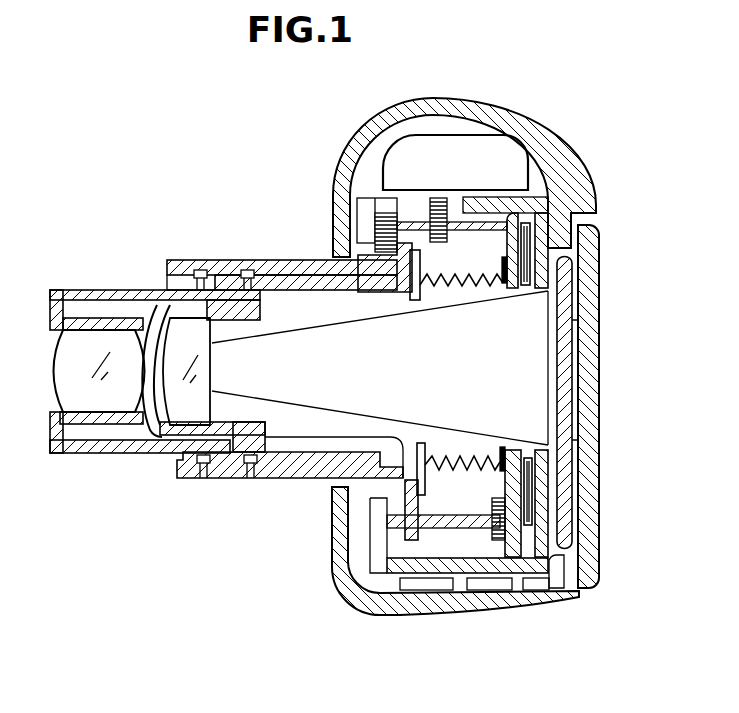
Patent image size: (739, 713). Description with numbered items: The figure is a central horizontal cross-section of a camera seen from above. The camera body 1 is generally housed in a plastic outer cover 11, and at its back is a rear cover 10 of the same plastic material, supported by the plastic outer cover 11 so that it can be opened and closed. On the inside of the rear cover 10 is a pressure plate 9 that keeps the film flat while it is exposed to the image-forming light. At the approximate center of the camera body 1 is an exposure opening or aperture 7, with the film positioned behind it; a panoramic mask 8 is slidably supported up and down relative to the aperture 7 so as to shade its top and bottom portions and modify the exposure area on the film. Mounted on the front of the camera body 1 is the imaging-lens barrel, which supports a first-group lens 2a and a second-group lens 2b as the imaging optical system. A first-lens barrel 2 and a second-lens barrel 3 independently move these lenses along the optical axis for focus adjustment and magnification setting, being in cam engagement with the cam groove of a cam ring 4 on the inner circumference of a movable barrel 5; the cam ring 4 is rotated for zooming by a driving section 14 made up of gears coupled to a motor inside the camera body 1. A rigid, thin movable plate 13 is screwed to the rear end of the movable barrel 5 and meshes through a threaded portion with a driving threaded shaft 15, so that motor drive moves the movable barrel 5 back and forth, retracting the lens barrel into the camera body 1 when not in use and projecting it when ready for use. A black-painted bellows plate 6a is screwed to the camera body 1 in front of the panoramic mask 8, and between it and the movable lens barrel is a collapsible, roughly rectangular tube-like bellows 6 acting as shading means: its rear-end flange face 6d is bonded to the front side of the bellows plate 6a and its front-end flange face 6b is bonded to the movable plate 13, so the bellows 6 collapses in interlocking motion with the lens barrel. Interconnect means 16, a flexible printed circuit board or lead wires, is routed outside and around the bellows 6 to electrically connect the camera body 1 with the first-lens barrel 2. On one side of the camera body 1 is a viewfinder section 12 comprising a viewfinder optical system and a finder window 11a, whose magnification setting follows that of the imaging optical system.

The camera body 1 is at (473, 204).
The first-lens barrel 2 is at (156, 378).
The first-group lens 2a is at (88, 397).
The second-group lens 2b is at (182, 407).
The second-lens barrel 3 is at (232, 478).
The cam ring 4 is at (288, 460).
The movable barrel 5 is at (310, 470).
The bellows 6 is at (521, 404).
The bellows plate 6a is at (533, 255).
The front-end flange face 6b is at (410, 290).
The rear-end flange face 6d is at (590, 326).
The exposure opening (aperture) 7 is at (540, 436).
The panoramic mask (P mask) 8 is at (525, 222).
The pressure plate 9 is at (571, 395).
The rear cover 10 is at (598, 300).
The plastic outer cover 11 is at (462, 108).
The finder window 11a is at (345, 176).
The viewfinder section 12 is at (506, 150).
The movable plate 13 is at (410, 252).
The driving section 14 is at (366, 236).
The driving threaded shaft 15 is at (392, 563).
The interconnect means 16 is at (268, 450).